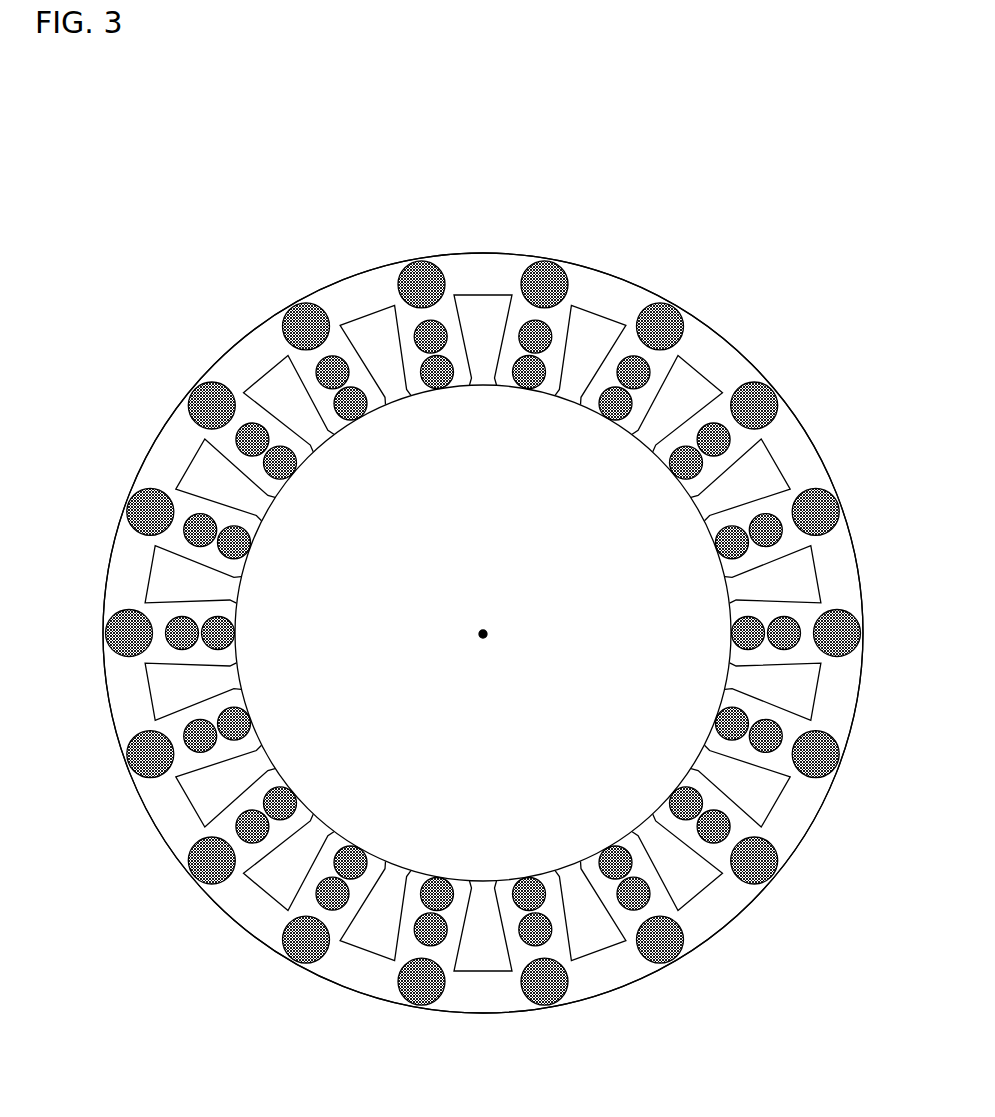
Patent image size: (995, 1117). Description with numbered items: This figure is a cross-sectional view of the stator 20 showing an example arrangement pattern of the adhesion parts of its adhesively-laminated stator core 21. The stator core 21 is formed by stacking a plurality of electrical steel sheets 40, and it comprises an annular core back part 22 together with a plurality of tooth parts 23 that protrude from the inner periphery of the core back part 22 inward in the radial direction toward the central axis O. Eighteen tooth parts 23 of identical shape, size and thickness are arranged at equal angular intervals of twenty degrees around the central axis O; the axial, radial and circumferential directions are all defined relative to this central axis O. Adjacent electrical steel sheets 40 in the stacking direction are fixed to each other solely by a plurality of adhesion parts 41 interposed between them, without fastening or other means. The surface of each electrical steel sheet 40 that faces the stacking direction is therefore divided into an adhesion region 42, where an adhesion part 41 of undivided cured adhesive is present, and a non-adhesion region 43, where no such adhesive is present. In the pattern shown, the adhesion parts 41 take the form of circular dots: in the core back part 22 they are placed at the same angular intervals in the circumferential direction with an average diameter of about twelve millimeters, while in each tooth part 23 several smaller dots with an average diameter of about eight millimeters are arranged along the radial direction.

The stator 20 is at (790, 122).
The stator core 21 is at (582, 182).
The core back part 22 is at (703, 345).
The tooth parts 23 is at (625, 350).
The electrical steel sheets 40 is at (253, 350).
The adhesion parts 41 is at (305, 320).
The adhesion region 42 is at (203, 755).
The non-adhesion region 43 is at (127, 702).
The central axis O is at (486, 631).